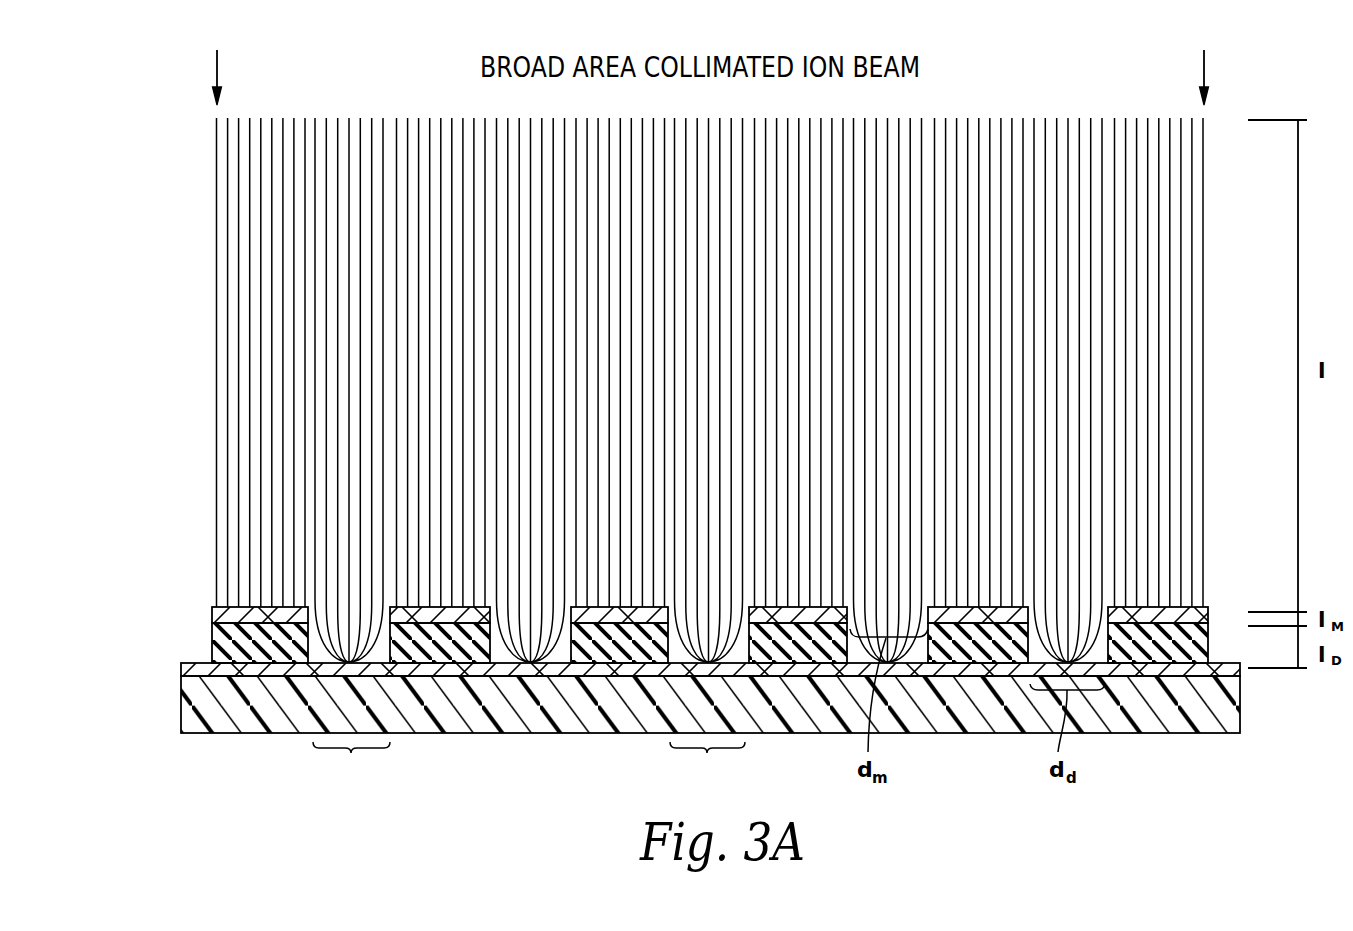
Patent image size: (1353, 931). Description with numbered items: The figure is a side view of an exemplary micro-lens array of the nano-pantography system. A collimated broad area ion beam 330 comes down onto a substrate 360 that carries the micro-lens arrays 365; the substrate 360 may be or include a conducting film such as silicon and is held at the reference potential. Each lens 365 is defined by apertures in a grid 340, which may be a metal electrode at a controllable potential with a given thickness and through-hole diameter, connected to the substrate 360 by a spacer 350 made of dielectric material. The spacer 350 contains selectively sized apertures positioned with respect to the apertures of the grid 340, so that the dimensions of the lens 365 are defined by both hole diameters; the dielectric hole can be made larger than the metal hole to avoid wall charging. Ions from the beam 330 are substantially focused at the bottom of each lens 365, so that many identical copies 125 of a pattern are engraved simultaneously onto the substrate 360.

The collimated broad area ion beam 330 is at (216, 317).
The grid 340 is at (212, 613).
The spacer 350 is at (212, 642).
The substrate 360 is at (181, 691).
The micro-lens array 365 is at (351, 763).
The identical copies 125 is at (707, 763).